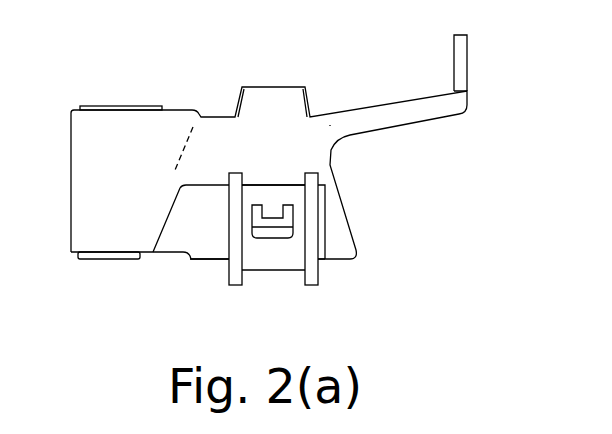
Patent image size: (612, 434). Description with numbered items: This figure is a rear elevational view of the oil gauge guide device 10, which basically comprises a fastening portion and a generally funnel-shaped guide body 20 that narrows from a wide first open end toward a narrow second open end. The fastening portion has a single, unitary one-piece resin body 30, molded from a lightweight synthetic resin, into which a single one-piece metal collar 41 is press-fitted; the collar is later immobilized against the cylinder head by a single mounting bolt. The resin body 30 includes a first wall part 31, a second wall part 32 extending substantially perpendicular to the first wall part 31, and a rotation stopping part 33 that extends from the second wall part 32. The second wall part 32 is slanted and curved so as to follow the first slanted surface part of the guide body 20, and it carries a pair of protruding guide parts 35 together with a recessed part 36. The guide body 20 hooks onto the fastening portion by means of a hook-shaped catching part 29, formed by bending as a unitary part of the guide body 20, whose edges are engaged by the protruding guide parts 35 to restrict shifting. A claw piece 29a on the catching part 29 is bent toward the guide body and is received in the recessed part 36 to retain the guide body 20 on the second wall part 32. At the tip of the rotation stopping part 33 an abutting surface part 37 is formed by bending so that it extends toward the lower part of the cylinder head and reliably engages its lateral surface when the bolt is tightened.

The oil gauge guide device 10 is at (285, 62).
The guide body 20 is at (352, 213).
The catching part 29 is at (273, 268).
The claw piece 29a is at (272, 213).
The resin body 30 is at (198, 101).
The first wall part 31 is at (78, 188).
The second wall part 32 is at (209, 245).
The rotation stopping part 33 is at (402, 112).
The protruding guide parts 35 is at (312, 286).
The recessed part 36 is at (296, 226).
The abutting surface part 37 is at (465, 61).
The metal collar 41 is at (114, 262).